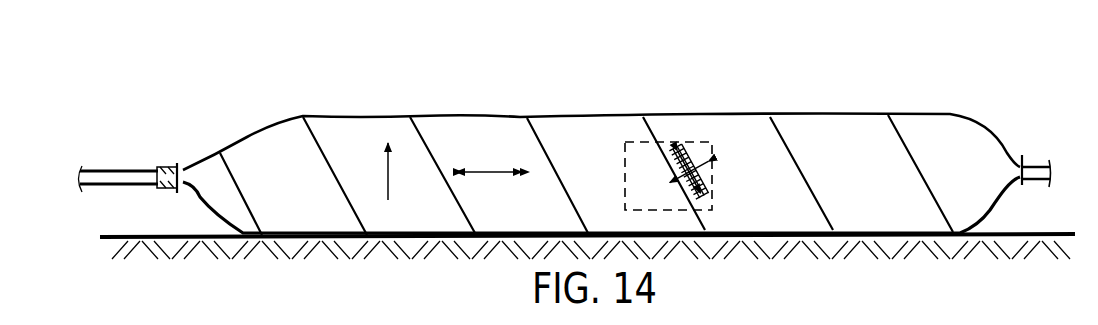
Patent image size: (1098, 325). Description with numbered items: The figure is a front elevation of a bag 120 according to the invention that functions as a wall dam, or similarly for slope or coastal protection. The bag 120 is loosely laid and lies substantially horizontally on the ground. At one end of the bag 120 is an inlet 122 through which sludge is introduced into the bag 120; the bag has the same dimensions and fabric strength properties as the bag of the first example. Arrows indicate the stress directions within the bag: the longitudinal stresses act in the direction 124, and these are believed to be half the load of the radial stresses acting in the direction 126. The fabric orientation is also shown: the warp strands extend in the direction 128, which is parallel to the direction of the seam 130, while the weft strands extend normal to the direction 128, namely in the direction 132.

The bag 120 is at (440, 98).
The inlet 122 is at (173, 156).
The longitudinal stress direction 124 is at (492, 168).
The radial stress direction 126 is at (383, 172).
The warp strand direction 128 is at (668, 143).
The seam 130 is at (798, 160).
The weft strand direction 132 is at (708, 180).